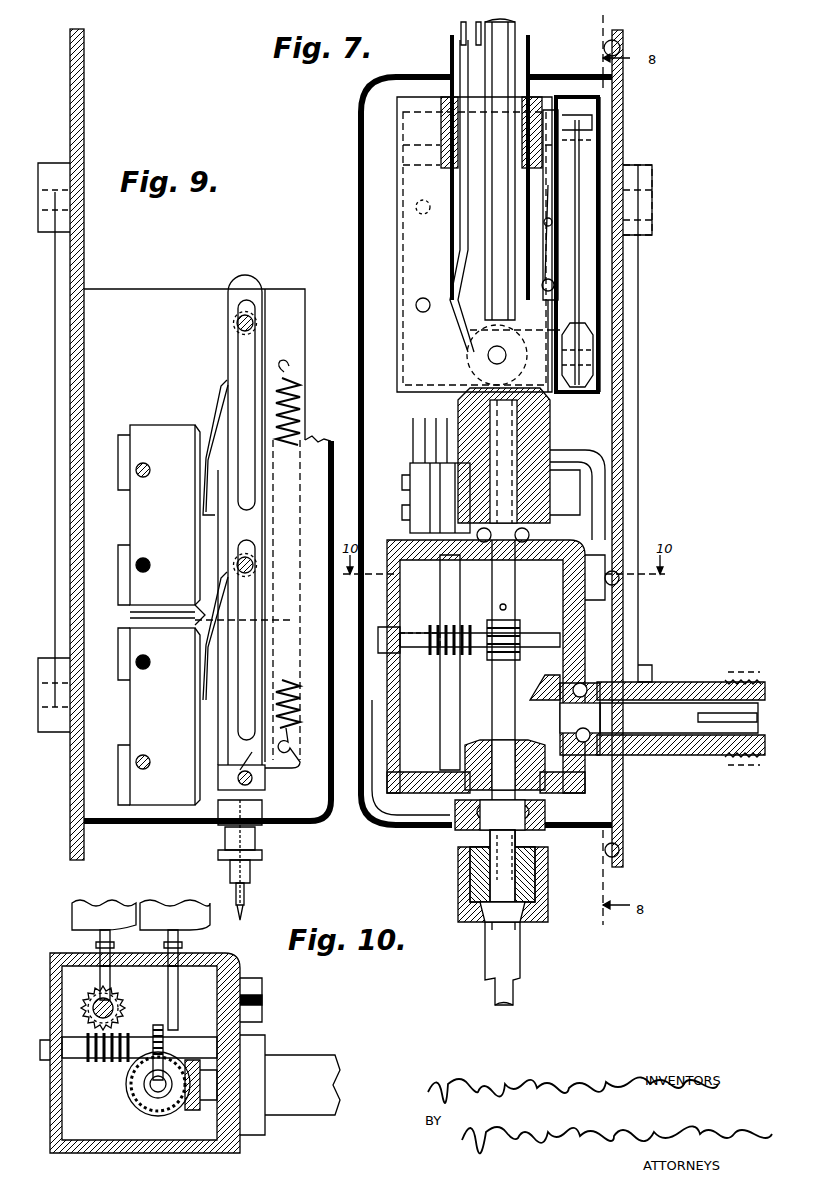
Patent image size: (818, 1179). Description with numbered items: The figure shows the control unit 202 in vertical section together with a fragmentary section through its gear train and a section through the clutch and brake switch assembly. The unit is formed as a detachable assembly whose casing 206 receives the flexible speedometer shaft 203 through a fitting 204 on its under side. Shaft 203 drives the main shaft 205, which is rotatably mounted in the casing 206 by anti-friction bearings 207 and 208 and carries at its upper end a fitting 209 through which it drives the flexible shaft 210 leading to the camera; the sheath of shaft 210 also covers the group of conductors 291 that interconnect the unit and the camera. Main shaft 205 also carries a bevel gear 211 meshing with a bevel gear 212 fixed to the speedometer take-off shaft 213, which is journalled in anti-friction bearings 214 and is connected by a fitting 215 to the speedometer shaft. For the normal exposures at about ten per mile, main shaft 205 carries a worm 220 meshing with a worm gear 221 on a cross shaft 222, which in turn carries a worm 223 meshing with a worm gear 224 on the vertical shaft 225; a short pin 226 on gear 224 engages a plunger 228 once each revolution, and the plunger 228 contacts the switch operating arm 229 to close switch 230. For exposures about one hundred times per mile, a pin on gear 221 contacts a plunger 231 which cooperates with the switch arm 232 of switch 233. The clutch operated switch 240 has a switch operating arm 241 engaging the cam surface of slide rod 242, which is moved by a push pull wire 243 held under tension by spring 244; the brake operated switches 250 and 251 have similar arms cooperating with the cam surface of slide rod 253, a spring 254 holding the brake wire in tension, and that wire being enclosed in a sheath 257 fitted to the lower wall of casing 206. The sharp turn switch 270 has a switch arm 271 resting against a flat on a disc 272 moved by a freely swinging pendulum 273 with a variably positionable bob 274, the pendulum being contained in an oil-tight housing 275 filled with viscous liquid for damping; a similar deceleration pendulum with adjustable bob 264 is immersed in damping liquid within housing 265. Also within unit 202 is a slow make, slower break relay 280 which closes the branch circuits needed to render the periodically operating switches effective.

In FIG. 9, the control unit 202 is at (326, 828).
In FIG. 7, the control unit 202 is at (358, 212).
In FIG. 7, the flexible shaft 203 is at (515, 995).
In FIG. 7, the fitting 204 is at (458, 878).
In FIG. 7, the main shaft 205 is at (500, 685).
In FIG. 10, the main shaft 205 is at (150, 1088).
In FIG. 7, the casing 206 is at (398, 752).
In FIG. 10, the casing 206 is at (50, 990).
In FIG. 7, the anti-friction bearing 207 is at (455, 818).
In FIG. 7, the anti-friction bearing 208 is at (560, 572).
In FIG. 7, the fitting 209 is at (552, 428).
In FIG. 7, the flexible shaft 210 is at (500, 250).
In FIG. 7, the bevel gear 211 is at (478, 740).
In FIG. 10, the bevel gear 211 is at (138, 1105).
In FIG. 7, the bevel gear 212 is at (550, 676).
In FIG. 10, the bevel gear 212 is at (192, 1108).
In FIG. 7, the speedometer take-off shaft 213 is at (645, 720).
In FIG. 10, the speedometer take-off shaft 213 is at (325, 1078).
In FIG. 7, the anti-friction bearings 214 is at (614, 680).
In FIG. 7, the fitting 215 is at (745, 672).
In FIG. 7, the worm 220 is at (520, 630).
In FIG. 10, the worm gear 221 is at (158, 1025).
In FIG. 7, the cross shaft 222 is at (475, 632).
In FIG. 10, the cross shaft 222 is at (193, 1045).
In FIG. 7, the worm 223 is at (438, 655).
In FIG. 10, the worm 223 is at (96, 1062).
In FIG. 10, the worm gear 224 is at (80, 1014).
In FIG. 7, the vertical shaft 225 is at (445, 592).
In FIG. 10, the vertical shaft 225 is at (105, 995).
In FIG. 10, the short pin 226 is at (115, 1000).
In FIG. 10, the plunger 228 is at (114, 945).
In FIG. 10, the switch operating arm 229 is at (105, 950).
In FIG. 10, the switch 230 is at (80, 912).
In FIG. 10, the plunger 231 is at (178, 1000).
In FIG. 10, the switch arm 232 is at (182, 945).
In FIG. 10, the switch 233 is at (172, 912).
In FIG. 9, the clutch operated switch 240 is at (130, 712).
In FIG. 9, the switch operating arm 241 is at (247, 690).
In FIG. 9, the slide rod 242 is at (265, 362).
In FIG. 9, the push pull wire 243 is at (244, 912).
In FIG. 9, the spring 244 is at (296, 432).
In FIG. 9, the brake operated switch 250 is at (159, 716).
In FIG. 9, the brake operated switch 251 is at (159, 521).
In FIG. 9, the slide rod 253 is at (228, 342).
In FIG. 9, the spring 254 is at (300, 406).
In FIG. 9, the sheath 257 is at (250, 890).
In FIG. 7, the adjustable bob 264 is at (470, 365).
In FIG. 7, the housing 265 is at (400, 310).
In FIG. 7, the sharp turn switch 270 is at (543, 320).
In FIG. 7, the switch arm 271 is at (546, 182).
In FIG. 7, the disc 272 is at (548, 110).
In FIG. 7, the pendulum 273 is at (580, 290).
In FIG. 7, the pendulum bob 274 is at (586, 340).
In FIG. 7, the oil-tight housing 275 is at (598, 163).
In FIG. 7, the relay 280 is at (410, 452).
In FIG. 7, the conductors 291 is at (475, 32).